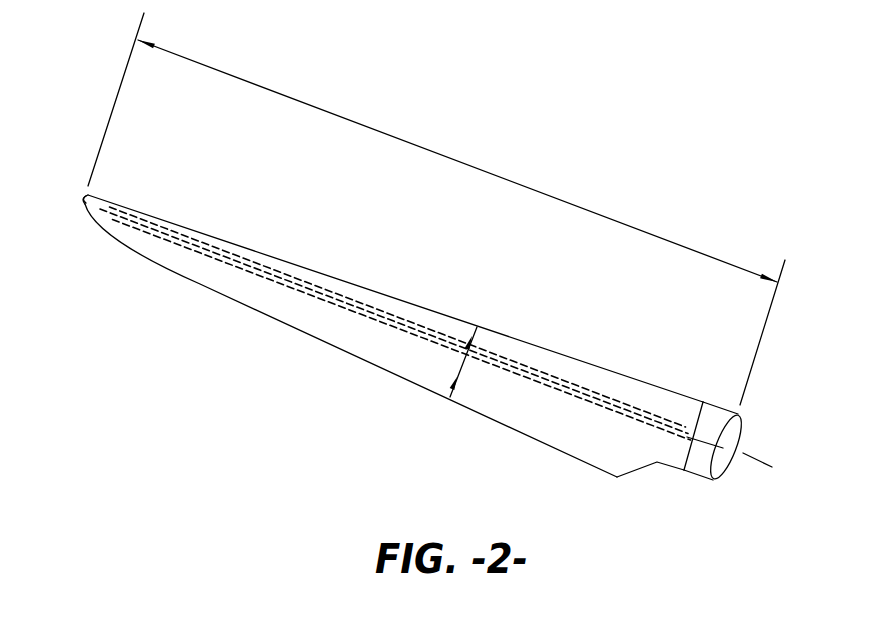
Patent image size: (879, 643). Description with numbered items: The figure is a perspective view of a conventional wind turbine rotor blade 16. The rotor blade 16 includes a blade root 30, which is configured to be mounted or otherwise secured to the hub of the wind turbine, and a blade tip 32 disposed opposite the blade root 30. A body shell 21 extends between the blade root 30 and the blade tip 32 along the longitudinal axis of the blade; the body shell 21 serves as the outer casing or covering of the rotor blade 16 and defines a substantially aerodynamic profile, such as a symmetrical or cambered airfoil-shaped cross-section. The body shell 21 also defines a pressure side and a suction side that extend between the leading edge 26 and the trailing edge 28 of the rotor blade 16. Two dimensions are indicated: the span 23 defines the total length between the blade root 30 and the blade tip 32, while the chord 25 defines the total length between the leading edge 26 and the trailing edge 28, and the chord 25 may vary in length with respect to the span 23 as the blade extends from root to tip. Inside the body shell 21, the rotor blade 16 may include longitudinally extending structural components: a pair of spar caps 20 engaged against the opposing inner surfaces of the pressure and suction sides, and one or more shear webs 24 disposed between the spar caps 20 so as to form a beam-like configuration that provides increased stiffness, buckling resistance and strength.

The rotor blade 16 is at (408, 318).
The spar caps 20 is at (378, 330).
The body shell 21 is at (292, 302).
The span 23 is at (367, 127).
The shear web 24 is at (85, 199).
The chord 25 is at (443, 337).
The leading edge 26 is at (597, 362).
The trailing edge 28 is at (578, 465).
The blade root 30 is at (701, 462).
The blade tip 32 is at (85, 200).